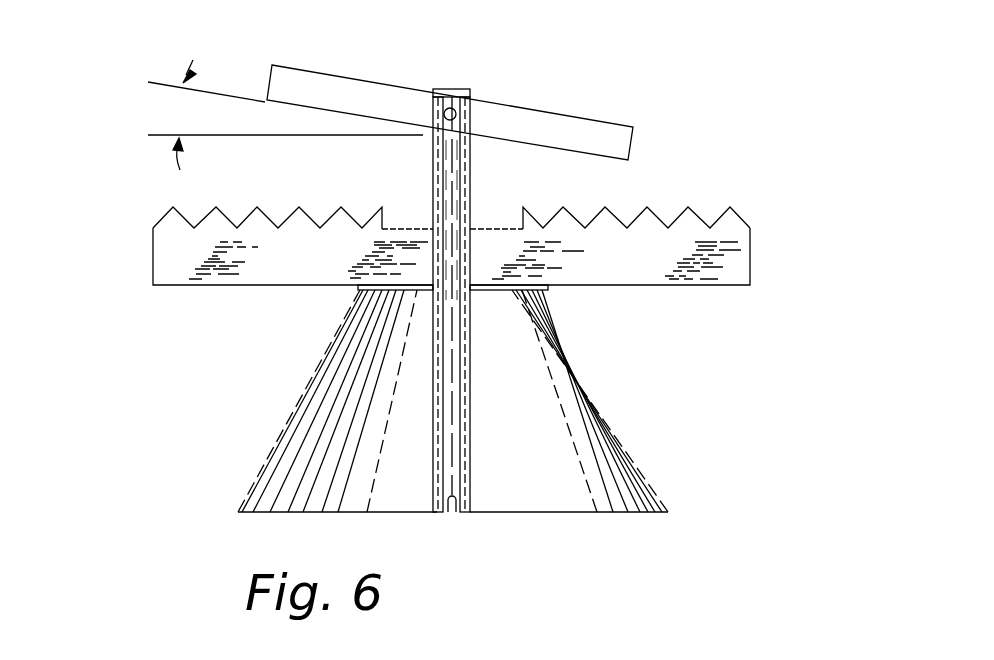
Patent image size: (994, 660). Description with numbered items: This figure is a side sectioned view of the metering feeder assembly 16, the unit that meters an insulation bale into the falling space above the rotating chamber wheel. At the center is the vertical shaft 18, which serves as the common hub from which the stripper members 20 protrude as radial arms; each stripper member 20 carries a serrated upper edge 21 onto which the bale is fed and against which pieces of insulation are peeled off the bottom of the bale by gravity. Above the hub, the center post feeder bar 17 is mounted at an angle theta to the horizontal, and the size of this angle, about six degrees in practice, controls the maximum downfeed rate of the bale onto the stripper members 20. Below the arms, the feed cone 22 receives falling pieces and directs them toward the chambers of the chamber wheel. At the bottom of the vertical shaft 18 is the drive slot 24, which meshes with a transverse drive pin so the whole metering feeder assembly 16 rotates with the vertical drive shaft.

The metering feeder assembly 16 is at (688, 100).
The center post feeder bar 17 is at (614, 122).
The vertical shaft 18 is at (470, 208).
The stripper members 20 is at (152, 268).
The serrated upper edge 21 is at (216, 207).
The feed cone 22 is at (643, 460).
The drive slot 24 is at (452, 514).